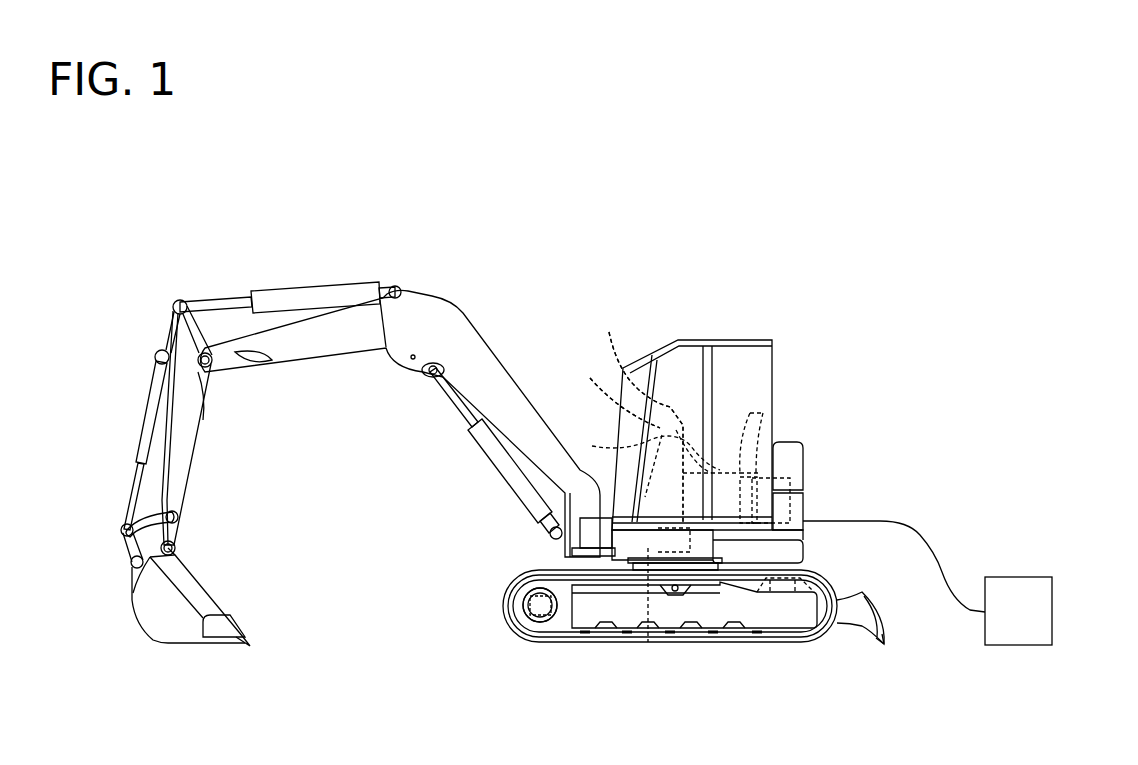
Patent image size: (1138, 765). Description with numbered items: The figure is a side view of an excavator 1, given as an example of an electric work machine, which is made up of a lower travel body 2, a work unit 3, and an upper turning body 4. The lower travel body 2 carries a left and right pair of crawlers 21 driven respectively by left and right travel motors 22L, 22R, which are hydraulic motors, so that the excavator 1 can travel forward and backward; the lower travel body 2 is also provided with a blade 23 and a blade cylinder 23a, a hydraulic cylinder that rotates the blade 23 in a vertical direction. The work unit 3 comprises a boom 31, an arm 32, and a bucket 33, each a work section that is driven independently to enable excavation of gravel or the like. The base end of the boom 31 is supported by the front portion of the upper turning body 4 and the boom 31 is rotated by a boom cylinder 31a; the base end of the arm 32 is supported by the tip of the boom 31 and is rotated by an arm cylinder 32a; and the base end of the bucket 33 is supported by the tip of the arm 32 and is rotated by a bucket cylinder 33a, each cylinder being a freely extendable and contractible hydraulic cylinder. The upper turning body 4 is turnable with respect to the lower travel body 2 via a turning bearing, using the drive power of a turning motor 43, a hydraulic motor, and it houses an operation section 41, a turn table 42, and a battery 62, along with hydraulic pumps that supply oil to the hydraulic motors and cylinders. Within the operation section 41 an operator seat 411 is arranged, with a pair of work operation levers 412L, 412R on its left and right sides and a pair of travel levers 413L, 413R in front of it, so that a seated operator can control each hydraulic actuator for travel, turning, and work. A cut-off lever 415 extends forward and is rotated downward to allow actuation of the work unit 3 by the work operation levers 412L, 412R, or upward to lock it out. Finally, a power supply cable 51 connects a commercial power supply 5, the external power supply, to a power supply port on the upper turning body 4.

The excavator 1 is at (738, 250).
The lower travel body 2 is at (497, 583).
The work unit 3 is at (300, 420).
The upper turning body 4 is at (796, 398).
The commercial power supply 5 is at (1057, 592).
The crawler 21 is at (505, 585).
The left travel motor 22L is at (537, 643).
The right travel motor 22R is at (525, 647).
The blade 23 is at (864, 597).
The blade cylinder 23a is at (775, 578).
The boom 31 is at (345, 345).
The boom cylinder 31a is at (513, 475).
The arm 32 is at (192, 450).
The arm cylinder 32a is at (318, 283).
The bucket 33 is at (142, 620).
The bucket cylinder 33a is at (150, 410).
The operation section 41 is at (705, 335).
The turn table 42 is at (600, 567).
The turning motor 43 is at (646, 642).
The power supply cable 51 is at (917, 530).
The battery 62 is at (800, 520).
The operator seat 411 is at (762, 413).
The left work operation lever 412L is at (646, 408).
The right work operation lever 412R is at (632, 418).
The left travel lever 413L is at (601, 417).
The right travel lever 413R is at (600, 392).
The cut-off lever 415 is at (643, 442).